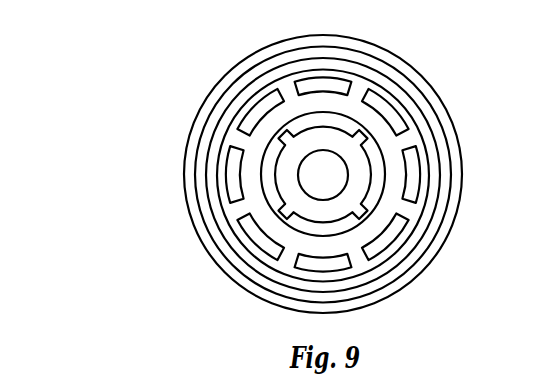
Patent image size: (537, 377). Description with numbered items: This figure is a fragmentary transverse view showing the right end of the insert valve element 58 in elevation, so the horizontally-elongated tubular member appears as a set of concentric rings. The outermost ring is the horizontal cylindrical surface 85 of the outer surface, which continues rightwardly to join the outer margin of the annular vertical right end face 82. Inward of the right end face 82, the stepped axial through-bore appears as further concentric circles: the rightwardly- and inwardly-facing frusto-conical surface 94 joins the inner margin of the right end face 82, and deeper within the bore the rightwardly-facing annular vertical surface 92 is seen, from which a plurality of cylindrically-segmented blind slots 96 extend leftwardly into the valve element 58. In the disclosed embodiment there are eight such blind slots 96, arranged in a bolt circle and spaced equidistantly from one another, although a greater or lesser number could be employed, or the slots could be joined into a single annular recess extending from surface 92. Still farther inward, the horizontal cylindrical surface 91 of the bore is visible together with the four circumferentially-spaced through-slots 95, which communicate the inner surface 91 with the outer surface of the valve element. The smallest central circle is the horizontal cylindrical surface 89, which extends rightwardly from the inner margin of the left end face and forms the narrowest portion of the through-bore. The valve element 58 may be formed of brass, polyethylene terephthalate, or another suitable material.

The valve element 58 is at (265, 159).
The right end face 82 is at (284, 175).
The horizontal cylindrical surface 85 is at (323, 159).
The horizontal cylindrical surface 89 is at (304, 181).
The horizontal cylindrical surface 91 is at (311, 127).
The rightwardly-facing annular vertical surface 92 is at (312, 165).
The frusto-conical surface 94 is at (301, 175).
The through-slots 95 is at (323, 176).
The blind slots 96 is at (335, 177).